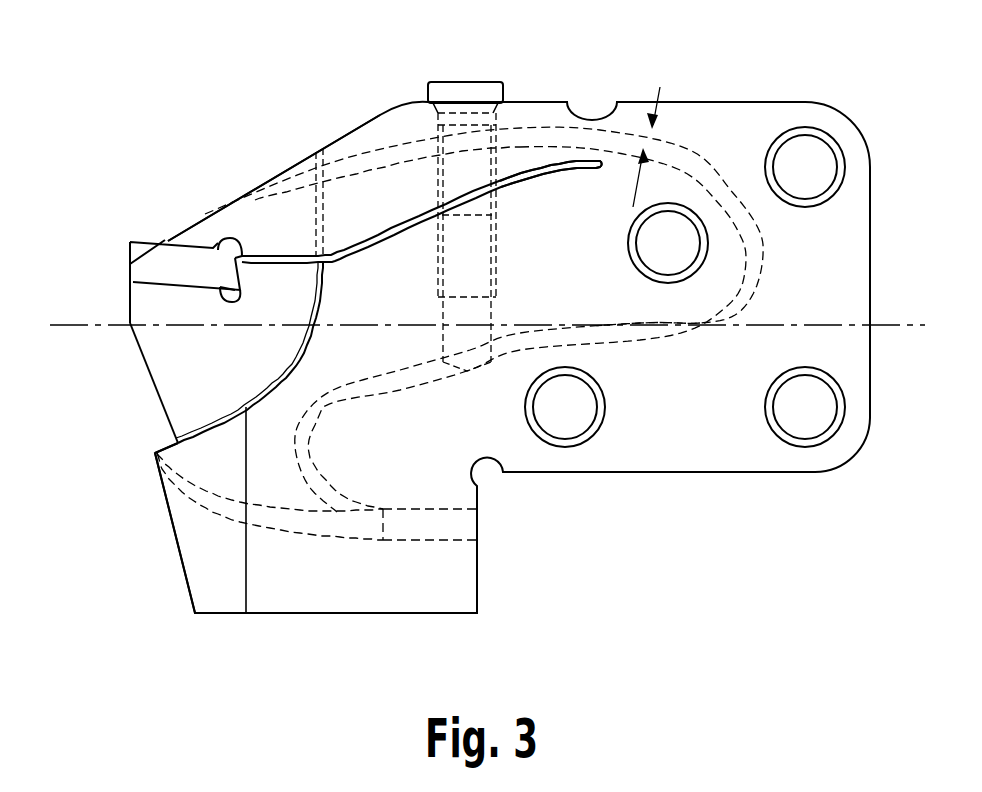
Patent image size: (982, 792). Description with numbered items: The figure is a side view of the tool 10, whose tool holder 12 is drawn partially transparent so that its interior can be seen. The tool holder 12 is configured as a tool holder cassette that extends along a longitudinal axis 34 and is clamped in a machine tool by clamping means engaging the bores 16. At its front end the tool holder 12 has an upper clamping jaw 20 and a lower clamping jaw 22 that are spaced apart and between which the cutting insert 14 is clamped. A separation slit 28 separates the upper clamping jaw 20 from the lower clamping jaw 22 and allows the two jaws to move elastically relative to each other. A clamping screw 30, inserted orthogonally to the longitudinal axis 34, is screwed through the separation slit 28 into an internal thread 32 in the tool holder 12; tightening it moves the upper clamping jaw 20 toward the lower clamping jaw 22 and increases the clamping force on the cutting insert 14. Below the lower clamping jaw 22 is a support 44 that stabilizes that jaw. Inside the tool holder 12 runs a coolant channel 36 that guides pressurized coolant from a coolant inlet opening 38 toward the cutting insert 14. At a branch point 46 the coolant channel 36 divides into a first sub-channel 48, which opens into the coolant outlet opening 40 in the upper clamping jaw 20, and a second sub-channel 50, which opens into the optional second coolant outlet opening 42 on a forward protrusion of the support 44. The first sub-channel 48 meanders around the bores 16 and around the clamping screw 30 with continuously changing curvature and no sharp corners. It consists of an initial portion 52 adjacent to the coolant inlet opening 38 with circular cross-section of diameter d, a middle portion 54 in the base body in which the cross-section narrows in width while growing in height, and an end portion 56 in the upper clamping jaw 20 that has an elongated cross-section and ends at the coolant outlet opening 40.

The tool 10 is at (110, 165).
The tool holder 12 is at (712, 447).
The cutting insert 14 is at (147, 268).
The bores 16 is at (681, 258).
The upper clamping jaw 20 is at (195, 232).
The lower clamping jaw 22 is at (177, 393).
The separation slit 28 is at (407, 233).
The clamping screw 30 is at (467, 93).
The internal thread 32 is at (490, 258).
The longitudinal axis 34 is at (67, 327).
The coolant channel 36 is at (652, 333).
The coolant inlet opening 38 is at (450, 528).
The coolant outlet opening 40 is at (243, 190).
The second coolant outlet opening 42 is at (173, 445).
The support 44 is at (200, 563).
The branch point 46 is at (357, 522).
The first sub-channel 48 is at (322, 408).
The second sub-channel 50 is at (273, 520).
The initial portion 52 is at (412, 152).
The middle portion 54 is at (333, 165).
The end portion 56 is at (293, 173).